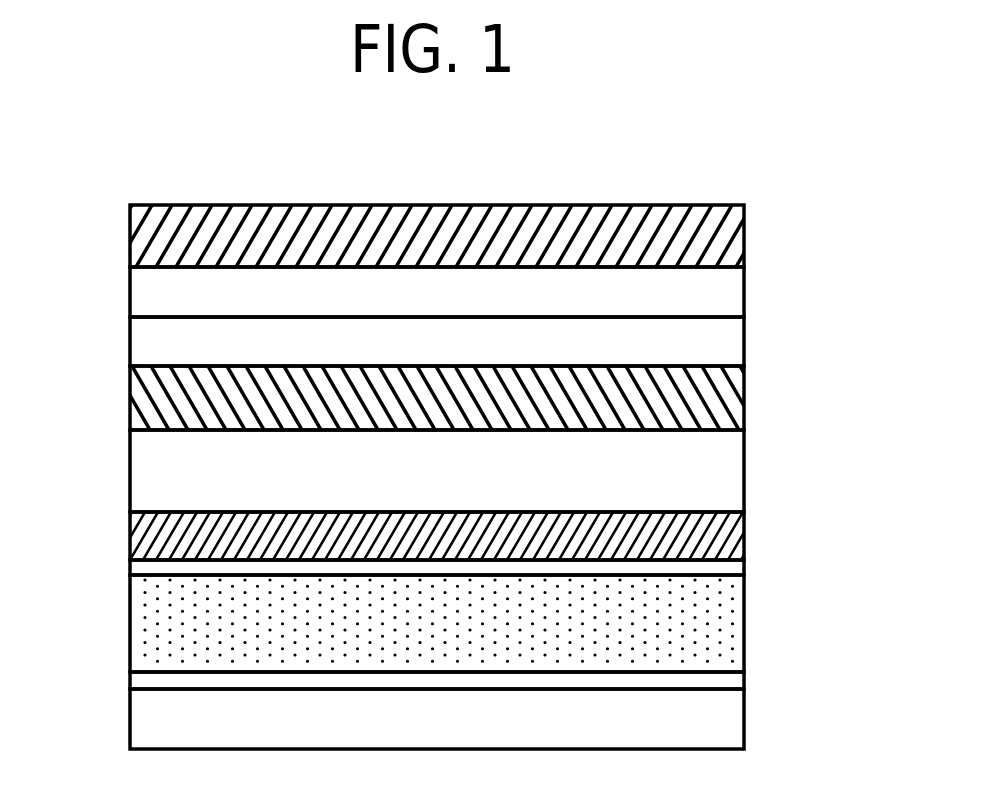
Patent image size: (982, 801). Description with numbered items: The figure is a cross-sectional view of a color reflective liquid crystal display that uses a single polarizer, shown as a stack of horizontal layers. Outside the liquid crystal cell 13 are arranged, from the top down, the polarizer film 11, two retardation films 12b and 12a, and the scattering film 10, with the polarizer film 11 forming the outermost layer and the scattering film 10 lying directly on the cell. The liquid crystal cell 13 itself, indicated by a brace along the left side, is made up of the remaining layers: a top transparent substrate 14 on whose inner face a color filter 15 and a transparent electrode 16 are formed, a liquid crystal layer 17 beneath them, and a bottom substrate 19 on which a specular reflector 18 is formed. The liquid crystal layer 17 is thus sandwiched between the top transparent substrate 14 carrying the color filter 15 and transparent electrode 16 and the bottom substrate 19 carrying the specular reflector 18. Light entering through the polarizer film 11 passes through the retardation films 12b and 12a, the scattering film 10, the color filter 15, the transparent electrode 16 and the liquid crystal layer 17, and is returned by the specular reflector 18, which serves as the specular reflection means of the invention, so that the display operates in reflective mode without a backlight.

The scattering film 10 is at (715, 400).
The polarizer film 11 is at (713, 243).
The retardation film 12a is at (703, 350).
The retardation film 12b is at (702, 300).
The liquid crystal cell 13 is at (107, 433).
The top transparent substrate 14 is at (703, 470).
The color filter 15 is at (747, 525).
The transparent electrode 16 is at (712, 563).
The liquid crystal layer 17 is at (713, 620).
The specular reflector 18 is at (712, 677).
The bottom substrate 19 is at (712, 717).